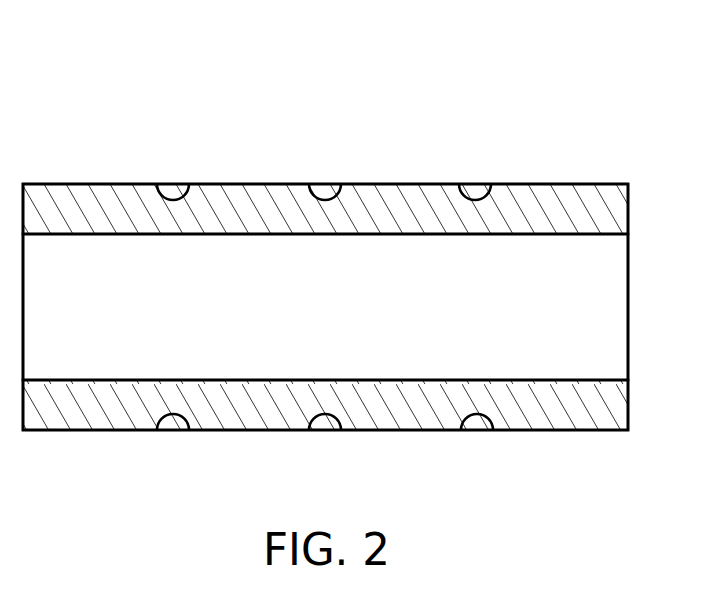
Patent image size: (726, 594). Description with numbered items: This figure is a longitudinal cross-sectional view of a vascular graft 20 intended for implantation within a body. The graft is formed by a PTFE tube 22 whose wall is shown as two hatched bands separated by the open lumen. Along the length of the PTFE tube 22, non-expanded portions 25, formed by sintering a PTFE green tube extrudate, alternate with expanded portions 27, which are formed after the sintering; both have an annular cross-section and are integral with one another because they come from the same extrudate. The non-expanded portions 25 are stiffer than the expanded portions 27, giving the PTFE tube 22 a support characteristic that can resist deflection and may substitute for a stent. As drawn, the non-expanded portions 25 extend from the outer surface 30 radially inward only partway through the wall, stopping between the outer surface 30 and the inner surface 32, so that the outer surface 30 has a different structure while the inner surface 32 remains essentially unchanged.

The vascular graft 20 is at (590, 124).
The PTFE tube 22 is at (622, 208).
The non-expanded portions 25 is at (173, 190).
The expanded portions 27 is at (57, 193).
The outer surface 30 is at (67, 432).
The inner surface 32 is at (265, 236).